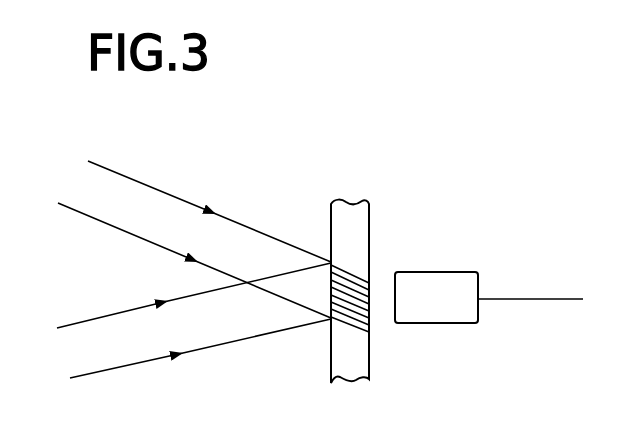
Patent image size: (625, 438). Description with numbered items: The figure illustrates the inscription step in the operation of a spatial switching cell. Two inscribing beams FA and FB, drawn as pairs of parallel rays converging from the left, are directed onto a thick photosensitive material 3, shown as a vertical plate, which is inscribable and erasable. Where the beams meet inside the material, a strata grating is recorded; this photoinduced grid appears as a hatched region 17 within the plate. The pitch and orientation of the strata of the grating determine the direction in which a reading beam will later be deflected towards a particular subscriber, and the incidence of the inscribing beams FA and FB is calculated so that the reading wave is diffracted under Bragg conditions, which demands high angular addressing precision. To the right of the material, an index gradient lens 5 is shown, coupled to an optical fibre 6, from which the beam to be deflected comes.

The thick photosensitive material 3 is at (345, 217).
The grating region 17 is at (352, 277).
The index gradient lens 5 is at (438, 272).
The optical fibre 6 is at (507, 297).
The inscribing beam FA is at (155, 202).
The inscribing beam FB is at (134, 352).